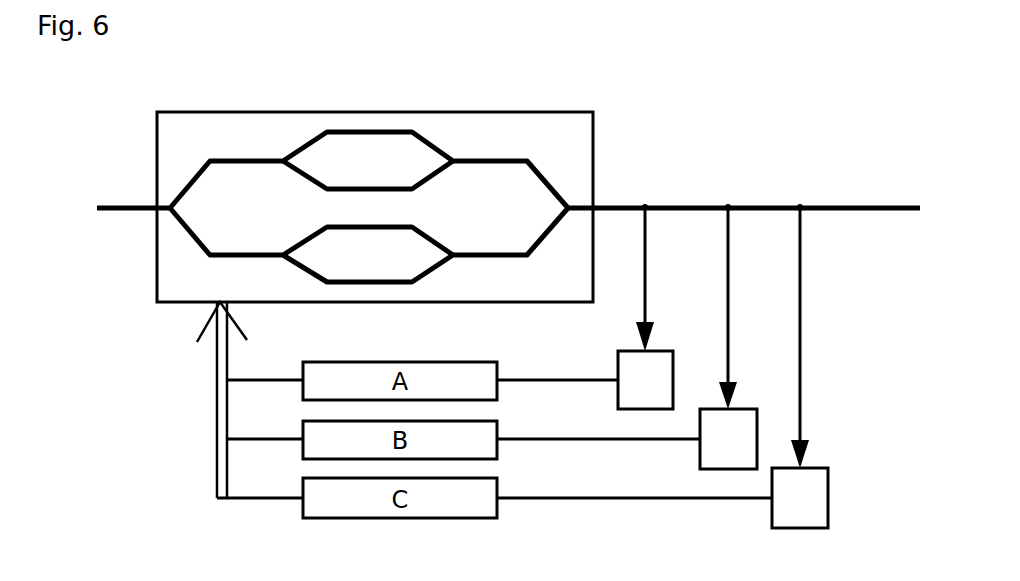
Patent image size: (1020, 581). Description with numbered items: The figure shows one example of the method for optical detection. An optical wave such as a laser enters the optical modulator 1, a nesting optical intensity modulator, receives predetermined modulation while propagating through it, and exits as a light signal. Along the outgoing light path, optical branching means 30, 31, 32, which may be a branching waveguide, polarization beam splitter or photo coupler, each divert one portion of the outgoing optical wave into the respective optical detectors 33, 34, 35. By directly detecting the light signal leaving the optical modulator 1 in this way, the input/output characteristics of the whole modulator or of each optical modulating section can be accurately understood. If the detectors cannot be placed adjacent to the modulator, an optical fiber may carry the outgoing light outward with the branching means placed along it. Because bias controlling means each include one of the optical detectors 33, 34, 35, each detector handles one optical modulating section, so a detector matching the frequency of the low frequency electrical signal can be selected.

The optical modulator 1 is at (498, 132).
The optical branching means 30 is at (645, 207).
The optical branching means 31 is at (728, 207).
The optical branching means 32 is at (800, 207).
The optical detector 33 is at (645, 380).
The optical detector 34 is at (728, 439).
The optical detector 35 is at (800, 498).